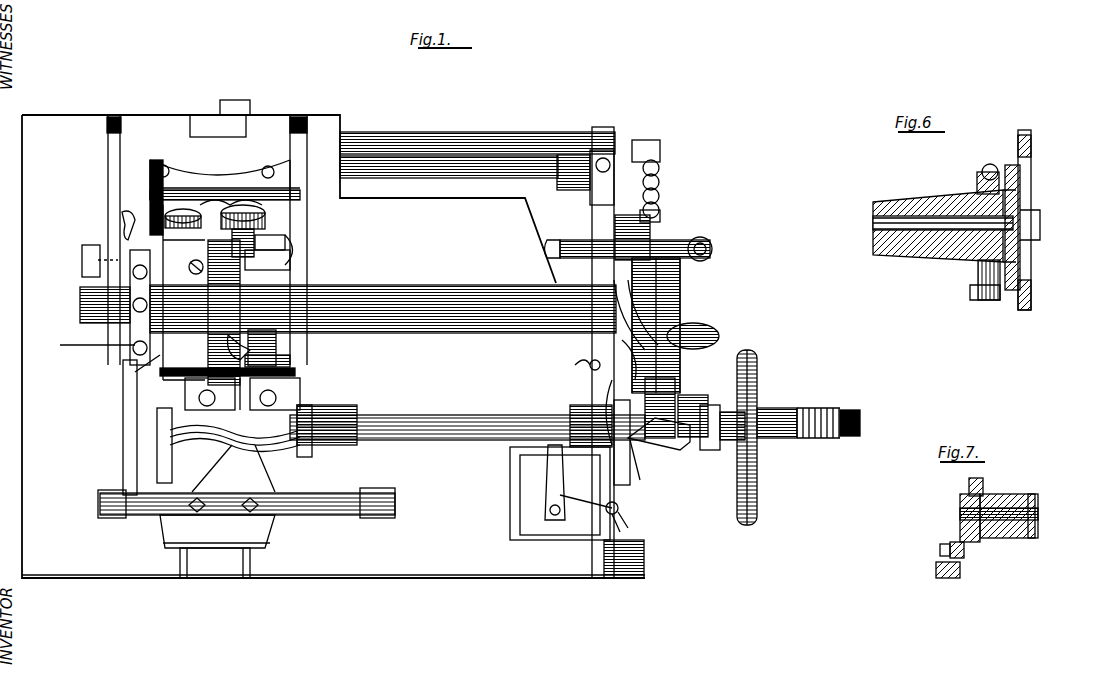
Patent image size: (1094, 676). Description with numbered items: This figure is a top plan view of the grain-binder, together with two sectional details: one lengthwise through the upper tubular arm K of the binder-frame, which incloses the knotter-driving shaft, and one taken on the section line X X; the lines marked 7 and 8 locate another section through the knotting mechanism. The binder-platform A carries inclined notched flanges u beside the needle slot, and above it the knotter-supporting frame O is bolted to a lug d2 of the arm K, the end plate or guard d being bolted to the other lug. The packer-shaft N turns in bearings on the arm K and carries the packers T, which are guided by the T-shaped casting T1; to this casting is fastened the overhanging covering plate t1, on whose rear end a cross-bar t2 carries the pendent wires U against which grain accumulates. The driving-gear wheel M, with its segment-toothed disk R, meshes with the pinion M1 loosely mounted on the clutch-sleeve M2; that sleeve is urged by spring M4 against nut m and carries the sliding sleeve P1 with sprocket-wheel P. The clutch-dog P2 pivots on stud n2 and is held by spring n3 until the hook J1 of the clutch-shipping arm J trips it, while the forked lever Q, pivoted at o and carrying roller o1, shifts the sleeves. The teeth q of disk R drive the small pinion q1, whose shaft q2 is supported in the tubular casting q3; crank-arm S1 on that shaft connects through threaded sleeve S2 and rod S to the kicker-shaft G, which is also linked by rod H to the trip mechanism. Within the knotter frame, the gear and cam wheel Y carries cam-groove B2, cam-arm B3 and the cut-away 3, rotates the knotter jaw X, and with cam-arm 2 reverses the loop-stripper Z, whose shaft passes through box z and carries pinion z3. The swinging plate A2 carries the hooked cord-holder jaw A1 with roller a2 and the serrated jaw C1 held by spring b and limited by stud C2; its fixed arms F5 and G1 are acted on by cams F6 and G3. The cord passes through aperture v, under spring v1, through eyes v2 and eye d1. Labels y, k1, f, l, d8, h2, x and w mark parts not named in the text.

In FIG. 1, the section line 7 is at (150, 470).
In FIG. 1, the rod H is at (477, 134).
In FIG. 1, the kicker-shaft G is at (438, 168).
In FIG. 1, the upper tubular arm of the binder-frame K is at (348, 295).
In FIG. 6, the upper tubular arm of the binder-frame K is at (872, 210).
In FIG. 1, the packer-shaft N is at (467, 417).
In FIG. 1, the spring b is at (183, 197).
In FIG. 1, the friction-roller a2 is at (268, 230).
In FIG. 1, the swinging plate A2 is at (245, 213).
In FIG. 1, the gear and cam wheel Y is at (234, 312).
In FIG. 1, the stop or stud C2 is at (195, 290).
In FIG. 1, the pin y is at (196, 256).
In FIG. 1, the second fixed arm G1 is at (275, 278).
In FIG. 1, the loop-stripper Z is at (300, 243).
In FIG. 1, the pin k1 is at (298, 262).
In FIG. 1, the eye d1 is at (305, 272).
In FIG. 1, the serrated jaw C1 is at (200, 200).
In FIG. 1, the cord-holder jaw A1 is at (235, 180).
In FIG. 1, the knotter-supporting frame O is at (219, 276).
In FIG. 1, the fixed arm F5 is at (140, 270).
In FIG. 1, the gear f is at (321, 234).
In FIG. 1, the cam F6 is at (96, 343).
In FIG. 1, the cam-arm 2 is at (120, 362).
In FIG. 1, the pinion z3 is at (145, 382).
In FIG. 1, the pendent flexible arms or stiff wires U is at (123, 423).
In FIG. 1, the section line 8 is at (148, 460).
In FIG. 1, the cam-groove B2 is at (268, 365).
In FIG. 1, the cam-arm B3 is at (285, 380).
In FIG. 1, the cam G3 is at (256, 348).
In FIG. 1, the lug d2 is at (322, 340).
In FIG. 1, the screw block l is at (242, 397).
In FIG. 1, the hollow cylinder or box z is at (245, 396).
In FIG. 1, the T-shaped head or casting T1 is at (235, 458).
In FIG. 1, the upper overhanging plate or covering t1 is at (234, 444).
In FIG. 1, the packers T is at (125, 463).
In FIG. 1, the cross-bar t2 is at (215, 515).
In FIG. 1, the inclined notched flanges u is at (180, 556).
In FIG. 1, the binder-platform A is at (429, 527).
In FIG. 1, the aperture v is at (565, 490).
In FIG. 1, the spring v1 is at (560, 460).
In FIG. 1, the eyes v2 is at (626, 515).
In FIG. 1, the end plate or guard d is at (619, 442).
In FIG. 1, the pin d8 is at (601, 378).
In FIG. 1, the pivot o is at (565, 381).
In FIG. 1, the arm h2 is at (570, 345).
In FIG. 6, the arm h2 is at (985, 165).
In FIG. 1, the bearing x is at (585, 198).
In FIG. 1, the section line X X is at (547, 248).
In FIG. 1, the cut-away surface 3 is at (655, 210).
In FIG. 1, the tubular casting q3 is at (660, 205).
In FIG. 7, the tubular casting q3 is at (1005, 490).
In FIG. 1, the small pinion q1 is at (662, 222).
In FIG. 7, the small pinion q1 is at (1038, 508).
In FIG. 1, the teeth q is at (690, 240).
In FIG. 6, the teeth q is at (1008, 290).
In FIG. 1, the disk R is at (660, 285).
In FIG. 6, the disk R is at (1030, 176).
In FIG. 1, the driving-gear wheel M is at (680, 305).
In FIG. 6, the driving-gear wheel M is at (1040, 224).
In FIG. 1, the small pinion M1 is at (675, 400).
In FIG. 1, the clutch-dog P2 is at (703, 409).
In FIG. 1, the hook J1 is at (659, 437).
In FIG. 1, the clutch-shifting forked lever Q is at (640, 475).
In FIG. 6, the clutch-shifting forked lever Q is at (976, 172).
In FIG. 1, the collar w is at (710, 448).
In FIG. 1, the clutch-shipping arm J is at (712, 455).
In FIG. 1, the spring n3 is at (698, 500).
In FIG. 1, the stud n2 is at (728, 470).
In FIG. 1, the sprocket-wheel P is at (753, 437).
In FIG. 1, the sliding sleeve P1 is at (758, 445).
In FIG. 1, the clutch-sleeve M2 is at (778, 408).
In FIG. 1, the spring M4 is at (816, 408).
In FIG. 1, the nut m is at (860, 421).
In FIG. 6, the roller o1 is at (977, 265).
In FIG. 7, the rod S is at (968, 483).
In FIG. 7, the crank-arm S1 is at (960, 530).
In FIG. 7, the screw-threaded sleeve S2 is at (935, 568).
In FIG. 7, the shaft q2 is at (1040, 520).